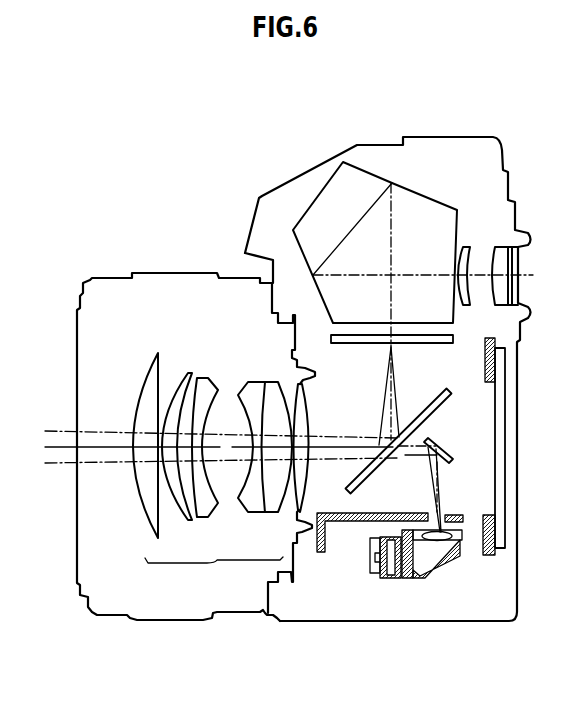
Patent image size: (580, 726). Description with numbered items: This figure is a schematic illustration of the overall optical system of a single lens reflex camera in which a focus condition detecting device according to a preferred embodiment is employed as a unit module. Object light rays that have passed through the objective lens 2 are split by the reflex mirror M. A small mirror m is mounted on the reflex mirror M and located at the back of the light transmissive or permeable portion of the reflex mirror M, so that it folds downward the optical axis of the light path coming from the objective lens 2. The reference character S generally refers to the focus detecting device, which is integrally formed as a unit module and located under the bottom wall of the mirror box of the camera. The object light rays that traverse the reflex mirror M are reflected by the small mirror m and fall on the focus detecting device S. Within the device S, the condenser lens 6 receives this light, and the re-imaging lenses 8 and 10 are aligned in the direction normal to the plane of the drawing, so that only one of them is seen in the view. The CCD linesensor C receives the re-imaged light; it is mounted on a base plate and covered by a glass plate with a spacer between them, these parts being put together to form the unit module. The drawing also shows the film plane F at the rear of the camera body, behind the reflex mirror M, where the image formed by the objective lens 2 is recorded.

The objective lens 2 is at (209, 563).
The reflex mirror M is at (428, 397).
The small mirror m is at (437, 440).
The film plane F is at (497, 425).
The condenser lens 6 is at (417, 588).
The CCD linesensor C is at (370, 558).
The re-imaging lens 8 is at (393, 580).
The re-imaging lens 10 is at (393, 583).
The focus detecting device S is at (395, 615).